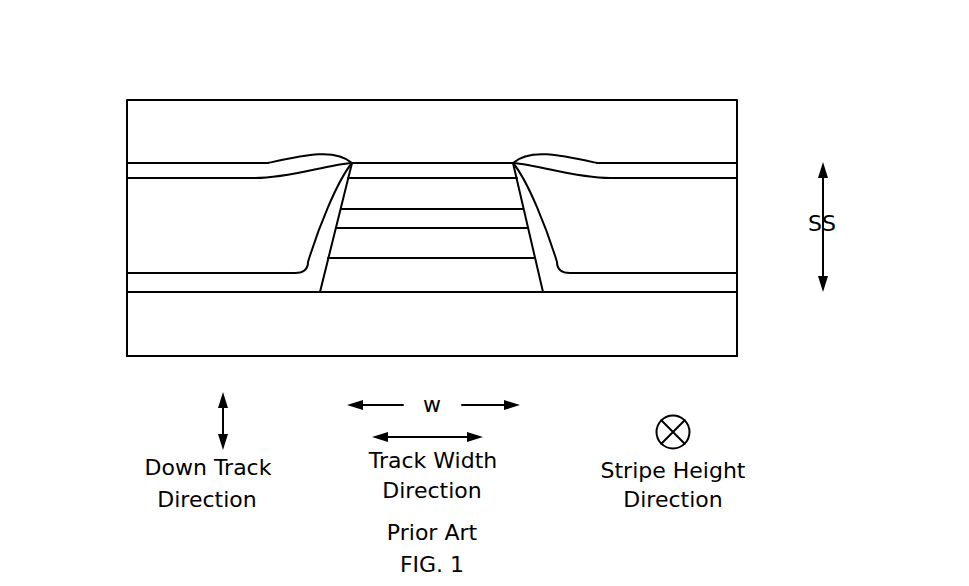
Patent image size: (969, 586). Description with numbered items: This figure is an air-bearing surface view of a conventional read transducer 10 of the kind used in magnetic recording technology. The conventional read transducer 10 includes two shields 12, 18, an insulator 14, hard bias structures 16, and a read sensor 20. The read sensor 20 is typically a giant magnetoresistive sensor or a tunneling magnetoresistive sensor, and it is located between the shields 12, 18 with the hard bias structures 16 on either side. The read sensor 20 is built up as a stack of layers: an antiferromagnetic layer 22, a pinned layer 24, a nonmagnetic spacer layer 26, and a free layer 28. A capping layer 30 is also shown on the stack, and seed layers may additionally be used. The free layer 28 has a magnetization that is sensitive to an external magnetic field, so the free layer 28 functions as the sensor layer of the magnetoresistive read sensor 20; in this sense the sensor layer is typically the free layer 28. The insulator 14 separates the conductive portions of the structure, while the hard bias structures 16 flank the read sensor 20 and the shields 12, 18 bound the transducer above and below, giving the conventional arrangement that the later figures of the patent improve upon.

The read transducer 10 is at (418, 46).
The shield 12 is at (737, 332).
The insulator 14 is at (140, 293).
The hard bias structures 16 is at (127, 237).
The shield 18 is at (740, 147).
The read sensor 20 is at (488, 302).
The antiferromagnetic layer 22 is at (337, 292).
The pinned layer 24 is at (513, 258).
The nonmagnetic spacer layer 26 is at (527, 218).
The free layer 28 is at (347, 198).
The capping layer 30 is at (480, 160).